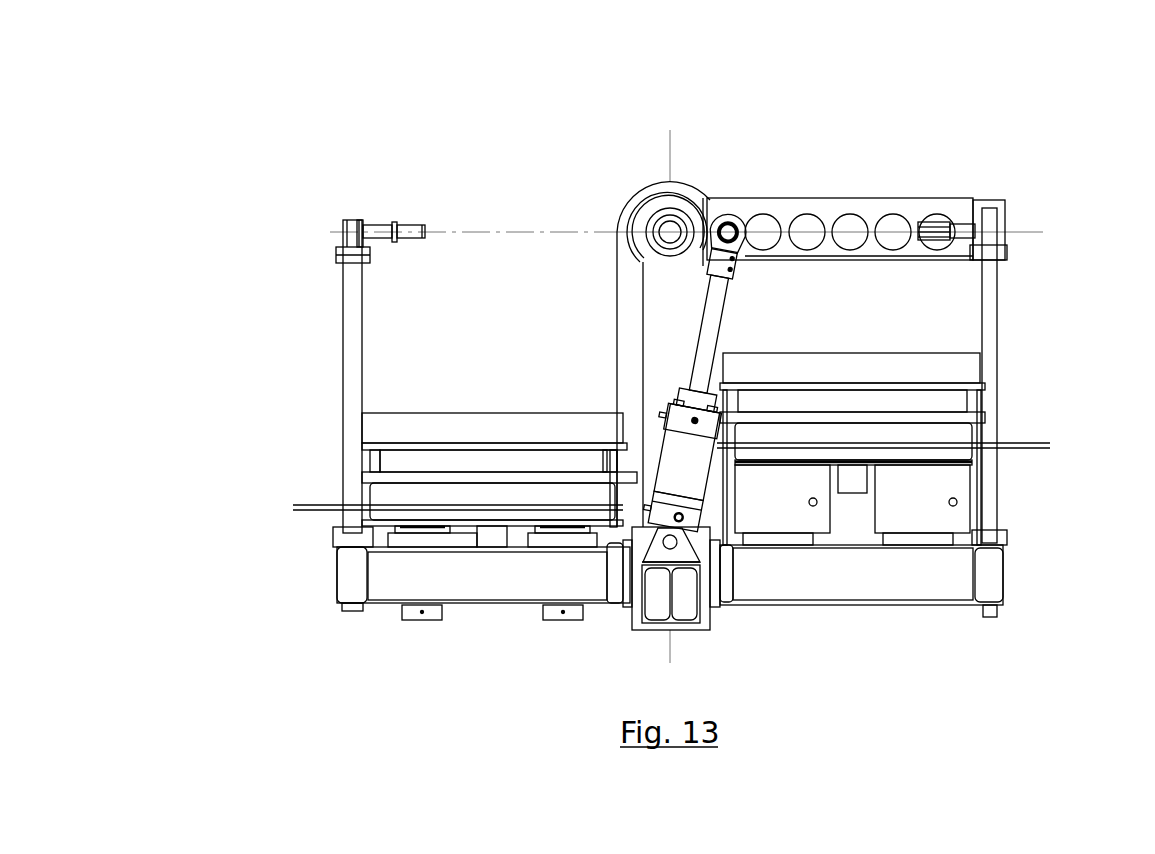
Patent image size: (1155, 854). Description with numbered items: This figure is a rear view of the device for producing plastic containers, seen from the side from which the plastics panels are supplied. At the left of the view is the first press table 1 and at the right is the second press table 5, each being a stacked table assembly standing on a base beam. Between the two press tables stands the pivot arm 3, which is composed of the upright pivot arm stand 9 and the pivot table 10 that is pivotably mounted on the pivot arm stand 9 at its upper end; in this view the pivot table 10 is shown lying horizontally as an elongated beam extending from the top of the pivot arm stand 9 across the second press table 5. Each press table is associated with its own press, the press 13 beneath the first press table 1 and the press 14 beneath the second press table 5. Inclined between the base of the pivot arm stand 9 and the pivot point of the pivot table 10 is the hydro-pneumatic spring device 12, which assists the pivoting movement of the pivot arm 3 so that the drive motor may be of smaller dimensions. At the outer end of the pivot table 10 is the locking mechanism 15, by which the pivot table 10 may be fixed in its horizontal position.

The first press table 1 is at (385, 497).
The pivot arm 3 is at (830, 212).
The second press table 5 is at (923, 435).
The pivot arm stand 9 is at (665, 320).
The pivot table 10 is at (907, 207).
The hydro-pneumatic spring device 12 is at (685, 462).
The press 13 is at (485, 533).
The press 14 is at (860, 482).
The locking mechanism 15 is at (957, 230).